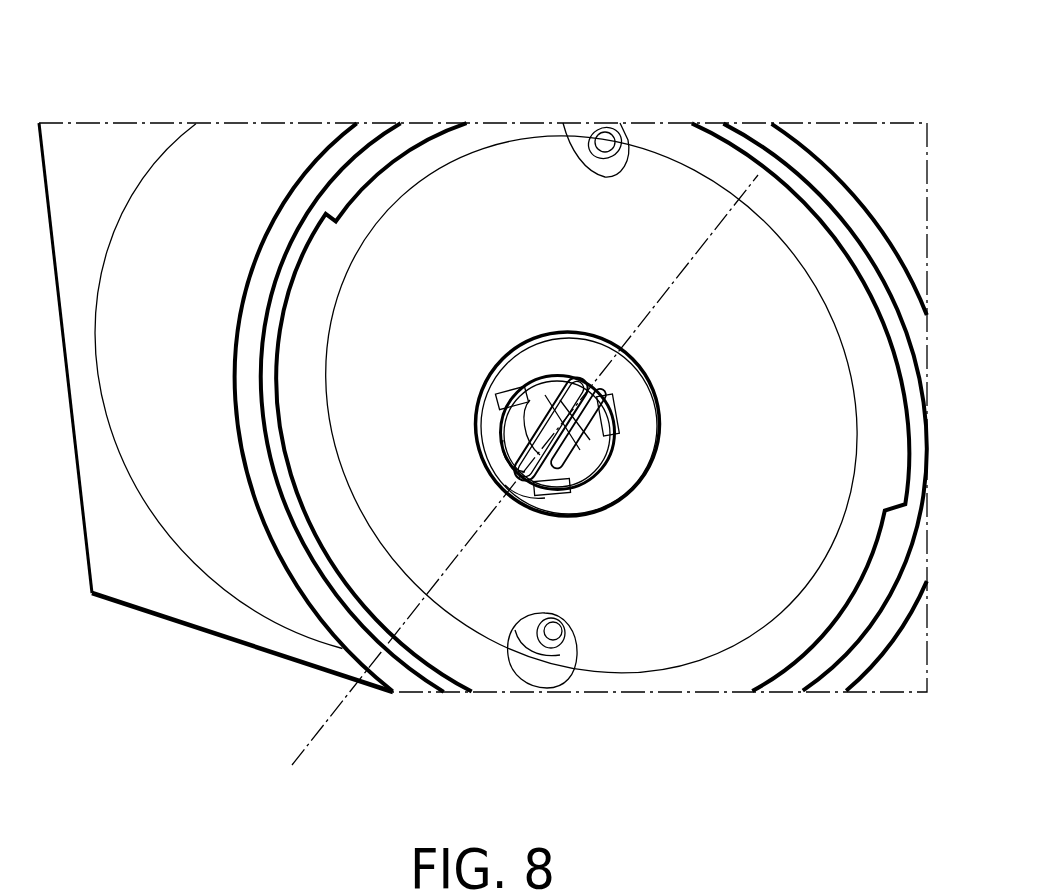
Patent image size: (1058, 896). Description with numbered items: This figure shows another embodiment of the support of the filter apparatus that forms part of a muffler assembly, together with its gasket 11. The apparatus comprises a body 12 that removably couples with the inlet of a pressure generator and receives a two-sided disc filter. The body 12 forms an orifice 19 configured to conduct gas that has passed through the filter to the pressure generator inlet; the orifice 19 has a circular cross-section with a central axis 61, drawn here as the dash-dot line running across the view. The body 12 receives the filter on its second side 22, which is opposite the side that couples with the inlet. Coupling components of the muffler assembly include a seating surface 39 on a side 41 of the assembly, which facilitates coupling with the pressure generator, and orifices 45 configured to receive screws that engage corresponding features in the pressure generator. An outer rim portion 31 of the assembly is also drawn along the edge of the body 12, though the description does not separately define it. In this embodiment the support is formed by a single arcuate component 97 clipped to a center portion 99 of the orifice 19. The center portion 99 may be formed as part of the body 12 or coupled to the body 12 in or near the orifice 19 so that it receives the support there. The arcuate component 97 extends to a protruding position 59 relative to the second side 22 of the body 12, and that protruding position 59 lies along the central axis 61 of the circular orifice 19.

The gasket 11 is at (640, 437).
The body 12 is at (750, 660).
The orifice 19 is at (544, 404).
The second side 22 is at (804, 329).
The rim 31 is at (845, 637).
The seating surface 39 is at (235, 160).
The side 41 is at (143, 106).
The orifices 45 is at (594, 126).
The protruding position 59 is at (507, 492).
The central axis 61 is at (713, 235).
The arcuate component 97 is at (507, 443).
The center portion 99 is at (598, 472).